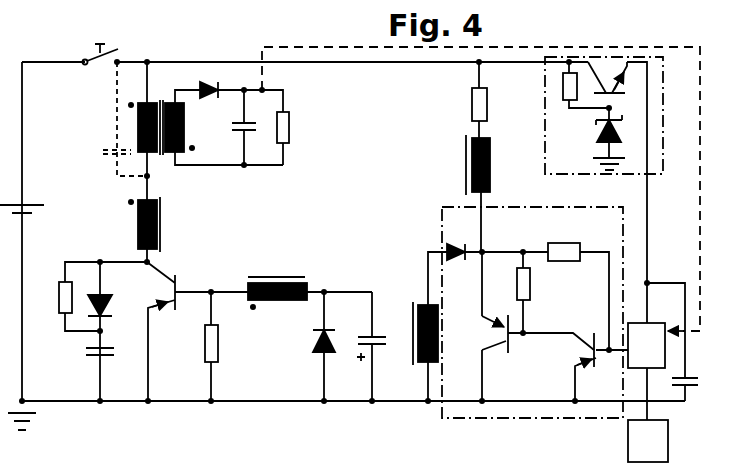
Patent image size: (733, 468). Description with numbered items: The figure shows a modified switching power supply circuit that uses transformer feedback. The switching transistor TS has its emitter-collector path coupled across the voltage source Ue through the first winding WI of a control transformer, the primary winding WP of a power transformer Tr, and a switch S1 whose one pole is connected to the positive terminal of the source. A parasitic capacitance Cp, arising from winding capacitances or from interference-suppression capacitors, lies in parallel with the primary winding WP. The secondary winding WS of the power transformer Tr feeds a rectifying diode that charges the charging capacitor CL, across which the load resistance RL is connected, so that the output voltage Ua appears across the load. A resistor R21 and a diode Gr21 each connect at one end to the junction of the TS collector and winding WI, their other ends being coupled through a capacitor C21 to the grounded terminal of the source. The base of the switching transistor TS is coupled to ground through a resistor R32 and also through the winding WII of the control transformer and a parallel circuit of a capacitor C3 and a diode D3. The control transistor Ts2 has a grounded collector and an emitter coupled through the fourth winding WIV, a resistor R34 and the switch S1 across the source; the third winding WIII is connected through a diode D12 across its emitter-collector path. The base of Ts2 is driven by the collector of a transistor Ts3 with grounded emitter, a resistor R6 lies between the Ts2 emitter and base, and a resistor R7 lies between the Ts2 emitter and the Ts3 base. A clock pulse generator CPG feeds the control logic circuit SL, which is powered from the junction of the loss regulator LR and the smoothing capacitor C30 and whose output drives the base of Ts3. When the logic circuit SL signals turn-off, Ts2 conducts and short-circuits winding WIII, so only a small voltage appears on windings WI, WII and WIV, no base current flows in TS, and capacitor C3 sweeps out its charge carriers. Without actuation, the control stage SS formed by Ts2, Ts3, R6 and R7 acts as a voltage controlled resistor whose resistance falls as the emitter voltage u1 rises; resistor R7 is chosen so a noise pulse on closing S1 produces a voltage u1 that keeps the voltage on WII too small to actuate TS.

The switch S1 is at (101, 40).
The voltage source Ue is at (26, 196).
The primary winding WP is at (138, 131).
The power transformer Tr is at (161, 156).
The parasitic capacitance Cp is at (120, 121).
The secondary winding WS is at (224, 123).
The charging capacitor CL is at (250, 127).
The load resistance RL is at (278, 127).
The output voltage Ua is at (263, 69).
The first winding of the control transformer WI is at (158, 229).
The resistor R21 is at (89, 296).
The diode Gr21 is at (115, 331).
The capacitor C21 is at (92, 363).
The switching transistor TS is at (179, 331).
The resistor R32 is at (199, 345).
The second winding of the control transformer WII is at (291, 283).
The diode D3 is at (315, 346).
The capacitor C3 is at (376, 346).
The third winding of the control transformer WIII is at (440, 326).
The voltage u1 is at (473, 396).
The control stage SS is at (507, 420).
The diode D12 is at (496, 310).
The resistor R7 is at (580, 288).
The resistor R6 is at (536, 294).
The control transistor Ts2 is at (538, 351).
The transistor Ts3 is at (601, 367).
The control logic circuit SL is at (646, 345).
The smoothing capacitor C30 is at (696, 394).
The clock pulse generator CPG is at (648, 415).
The resistor R34 is at (496, 100).
The fourth winding of the control transformer WIV is at (453, 193).
The loss regulator LR is at (543, 154).